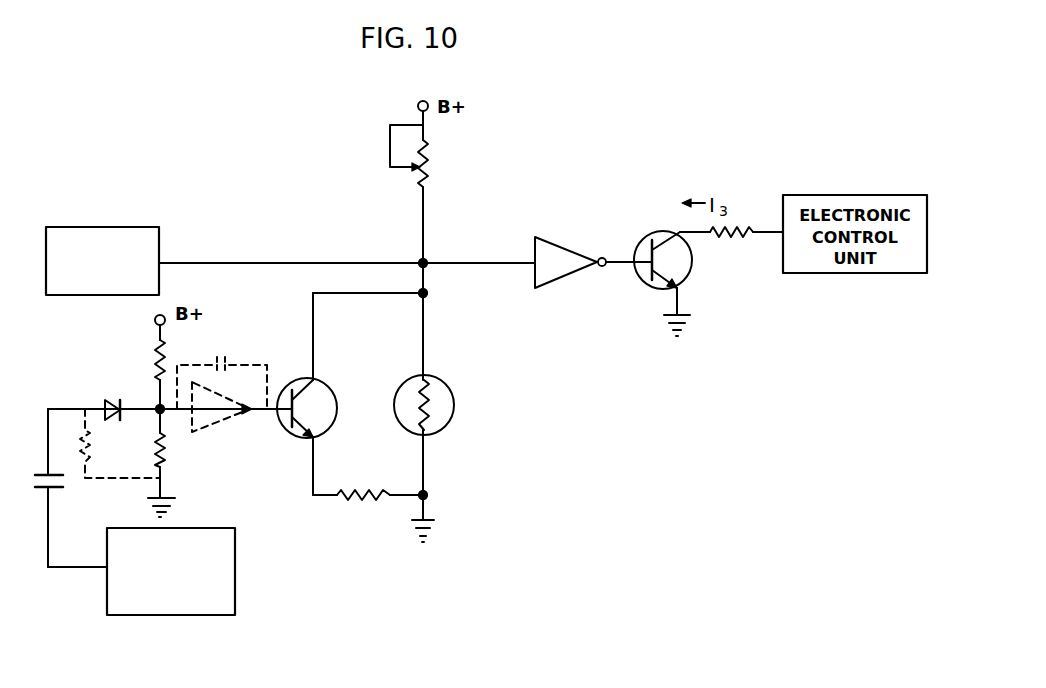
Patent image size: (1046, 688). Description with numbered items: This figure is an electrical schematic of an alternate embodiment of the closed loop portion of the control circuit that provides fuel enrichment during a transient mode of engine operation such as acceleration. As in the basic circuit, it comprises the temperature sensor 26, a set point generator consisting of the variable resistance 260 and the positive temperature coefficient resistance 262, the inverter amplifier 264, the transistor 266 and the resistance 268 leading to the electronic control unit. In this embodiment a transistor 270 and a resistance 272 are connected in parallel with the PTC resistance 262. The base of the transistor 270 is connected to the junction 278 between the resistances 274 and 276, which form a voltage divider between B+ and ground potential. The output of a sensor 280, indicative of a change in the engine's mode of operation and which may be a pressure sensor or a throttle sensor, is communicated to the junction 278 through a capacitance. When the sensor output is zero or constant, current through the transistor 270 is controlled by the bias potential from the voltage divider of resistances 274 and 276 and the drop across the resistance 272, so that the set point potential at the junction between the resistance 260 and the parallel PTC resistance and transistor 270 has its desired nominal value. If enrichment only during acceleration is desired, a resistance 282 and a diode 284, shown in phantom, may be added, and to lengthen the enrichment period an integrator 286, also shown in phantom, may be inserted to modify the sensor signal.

The temperature sensor 26 is at (98, 226).
The variable resistance 260 is at (431, 152).
The positive temperature coefficient resistance 262 is at (449, 392).
The inverter amplifier 264 is at (553, 237).
The transistor 266 is at (655, 291).
The resistance 268 is at (717, 240).
The transistor 270 is at (321, 386).
The resistance 272 is at (362, 497).
The resistance 274 is at (155, 353).
The resistance 276 is at (166, 470).
The junction 278 is at (163, 414).
The sensor 280 is at (235, 590).
The resistance 282 is at (92, 445).
The diode 284 is at (131, 387).
The integrator 286 is at (222, 426).